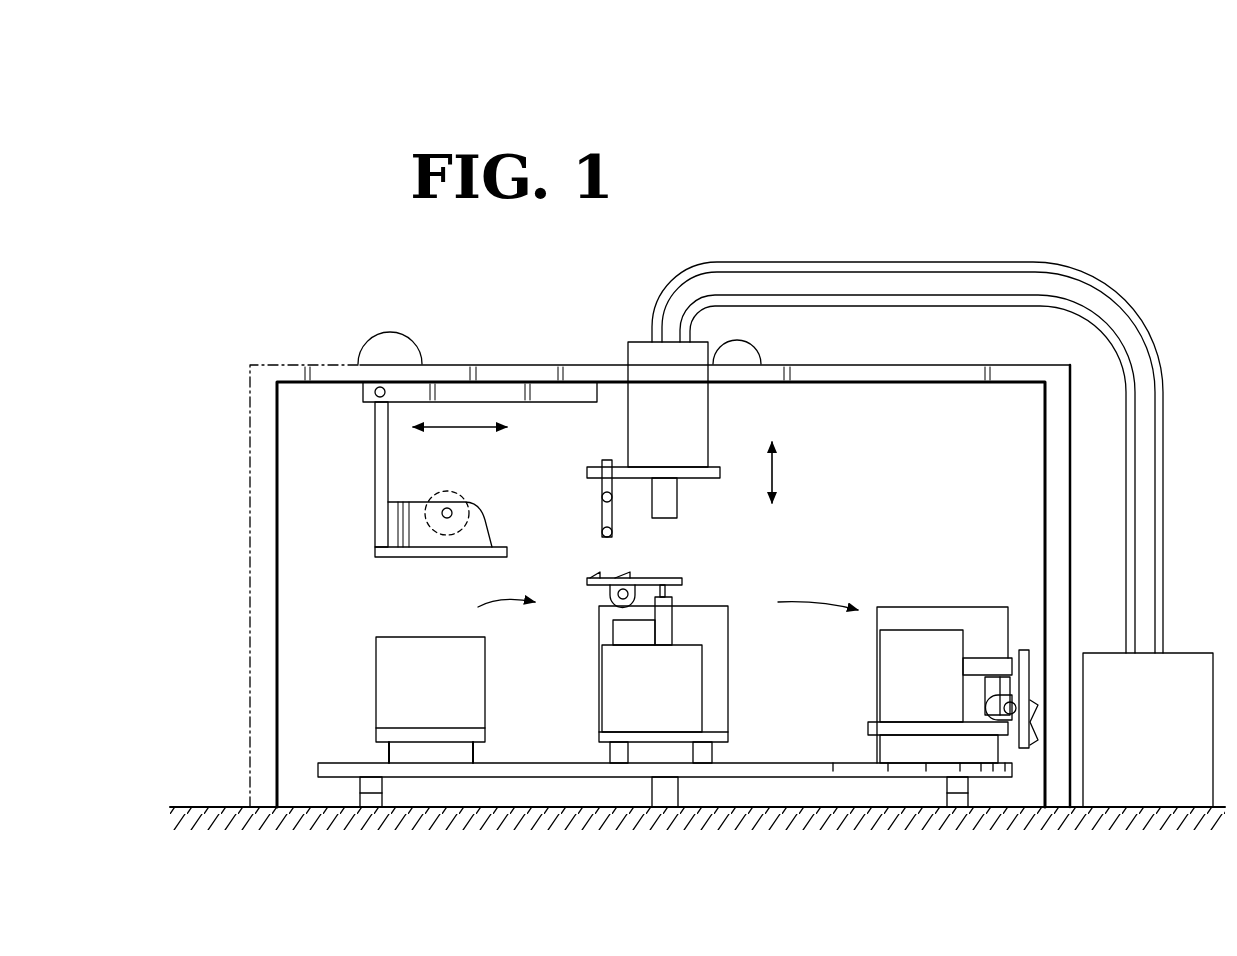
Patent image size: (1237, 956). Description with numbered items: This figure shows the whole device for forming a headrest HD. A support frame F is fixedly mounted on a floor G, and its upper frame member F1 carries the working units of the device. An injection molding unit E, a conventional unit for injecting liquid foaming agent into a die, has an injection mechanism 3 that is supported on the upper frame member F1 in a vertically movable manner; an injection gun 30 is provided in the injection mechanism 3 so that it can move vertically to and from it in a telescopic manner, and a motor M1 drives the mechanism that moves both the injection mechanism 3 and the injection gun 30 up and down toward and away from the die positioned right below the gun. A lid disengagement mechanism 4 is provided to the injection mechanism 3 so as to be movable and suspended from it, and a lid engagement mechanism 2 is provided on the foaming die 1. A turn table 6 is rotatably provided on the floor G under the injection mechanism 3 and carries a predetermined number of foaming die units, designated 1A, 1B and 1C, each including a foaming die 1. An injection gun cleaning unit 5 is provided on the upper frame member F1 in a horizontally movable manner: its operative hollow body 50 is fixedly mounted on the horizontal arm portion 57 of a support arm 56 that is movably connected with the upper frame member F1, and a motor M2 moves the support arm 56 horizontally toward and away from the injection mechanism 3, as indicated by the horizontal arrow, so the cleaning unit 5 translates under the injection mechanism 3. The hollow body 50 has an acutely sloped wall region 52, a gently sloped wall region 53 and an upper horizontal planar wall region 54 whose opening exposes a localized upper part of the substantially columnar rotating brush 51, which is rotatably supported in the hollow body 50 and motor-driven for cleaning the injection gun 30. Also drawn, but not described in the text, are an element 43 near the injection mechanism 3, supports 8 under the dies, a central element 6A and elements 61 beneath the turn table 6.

The device for forming headrest HD is at (843, 243).
The motor M2 is at (400, 340).
The motor M1 is at (748, 342).
The upper frame member F1 is at (547, 370).
The support frame F is at (248, 508).
The injection mechanism 3 is at (642, 350).
The upper horizontal planar wall region 54 is at (487, 395).
The support arm 56 is at (377, 443).
The horizontal arm portion 57 is at (393, 562).
The operative hollow body 50 is at (423, 537).
The rotating brush 51 is at (457, 495).
The acutely sloped wall region 52 is at (475, 502).
The gently sloped wall region 53 is at (492, 532).
The injection gun cleaning unit 5 is at (435, 508).
The lid disengagement mechanism 4 is at (597, 507).
The vertical plate / lifting direction 43 is at (718, 468).
The injection gun 30 is at (668, 503).
The lid engagement mechanism 2 is at (660, 573).
The foaming die unit 1A is at (753, 580).
The foaming die unit 1B is at (360, 656).
The foaming die unit 1C is at (935, 580).
The foaming die 1 is at (703, 655).
The pallet / support 8 is at (388, 753).
The turn table 6 is at (523, 763).
The center leg 6A is at (665, 800).
The leg 61 is at (372, 806).
The floor G is at (210, 806).
The injection molding unit E is at (1148, 730).